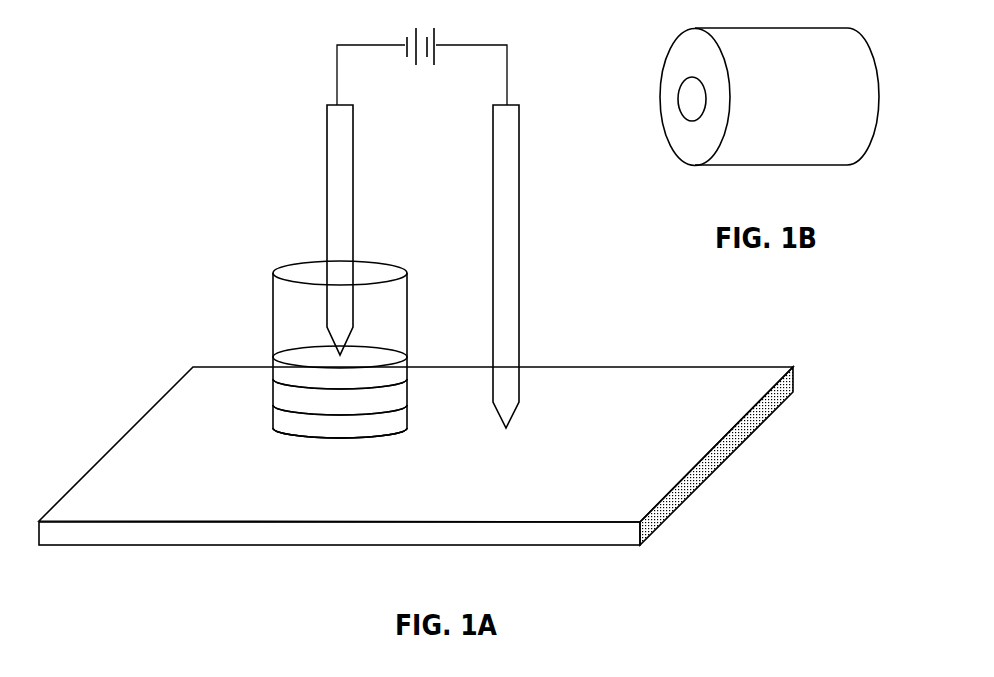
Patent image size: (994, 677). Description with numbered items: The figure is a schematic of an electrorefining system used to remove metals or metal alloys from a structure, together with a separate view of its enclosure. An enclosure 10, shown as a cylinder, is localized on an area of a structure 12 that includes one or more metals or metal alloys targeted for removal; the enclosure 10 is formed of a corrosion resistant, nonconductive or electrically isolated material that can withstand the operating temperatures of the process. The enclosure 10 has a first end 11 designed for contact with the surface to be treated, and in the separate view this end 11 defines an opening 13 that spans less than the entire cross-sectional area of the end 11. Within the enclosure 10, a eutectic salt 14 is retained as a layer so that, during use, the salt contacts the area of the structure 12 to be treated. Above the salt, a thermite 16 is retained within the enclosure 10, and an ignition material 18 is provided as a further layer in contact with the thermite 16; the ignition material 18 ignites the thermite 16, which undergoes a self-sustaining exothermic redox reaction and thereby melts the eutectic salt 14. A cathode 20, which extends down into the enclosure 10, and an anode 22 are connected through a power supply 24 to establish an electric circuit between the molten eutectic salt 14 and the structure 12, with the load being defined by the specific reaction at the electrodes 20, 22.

In FIG. 1A, the enclosure 10 is at (273, 305).
In FIG. 1B, the enclosure 10 is at (780, 165).
In FIG. 1A, the first end 11 is at (273, 428).
In FIG. 1B, the first end 11 is at (683, 132).
In FIG. 1A, the structure 12 is at (167, 438).
In FIG. 1B, the opening 13 is at (683, 93).
In FIG. 1A, the eutectic salt 14 is at (407, 420).
In FIG. 1A, the thermite 16 is at (407, 405).
In FIG. 1A, the ignition material 18 is at (407, 377).
In FIG. 1A, the cathode 20 is at (327, 165).
In FIG. 1A, the anode 22 is at (519, 243).
In FIG. 1A, the power supply 24 is at (414, 35).